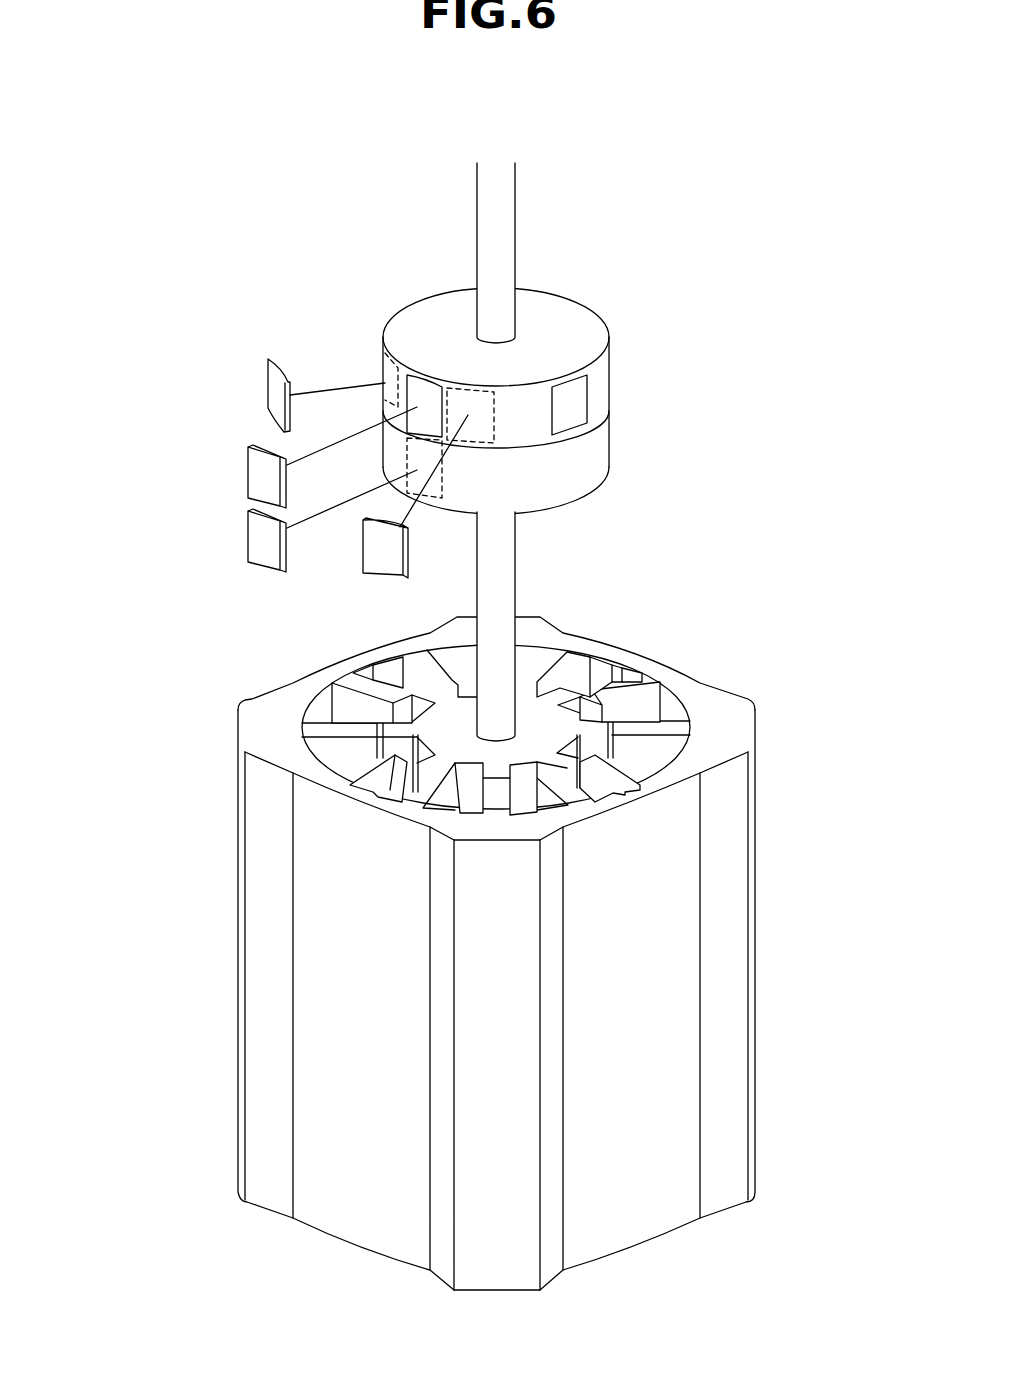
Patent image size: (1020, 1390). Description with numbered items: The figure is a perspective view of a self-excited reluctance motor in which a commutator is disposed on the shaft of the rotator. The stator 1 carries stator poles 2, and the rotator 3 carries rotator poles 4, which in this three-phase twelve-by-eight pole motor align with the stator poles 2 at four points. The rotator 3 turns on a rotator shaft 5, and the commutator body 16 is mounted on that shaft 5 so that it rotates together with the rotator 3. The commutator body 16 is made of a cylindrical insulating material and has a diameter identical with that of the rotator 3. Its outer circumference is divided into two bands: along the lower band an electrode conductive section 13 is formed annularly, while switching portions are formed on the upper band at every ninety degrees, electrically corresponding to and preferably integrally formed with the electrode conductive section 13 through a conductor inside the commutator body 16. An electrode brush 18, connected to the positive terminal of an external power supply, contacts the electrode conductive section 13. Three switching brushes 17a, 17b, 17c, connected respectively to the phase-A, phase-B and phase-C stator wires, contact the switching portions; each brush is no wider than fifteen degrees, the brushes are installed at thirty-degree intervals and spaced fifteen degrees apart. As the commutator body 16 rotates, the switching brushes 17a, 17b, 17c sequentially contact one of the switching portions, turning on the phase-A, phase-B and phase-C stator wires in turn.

The stator 1 is at (267, 732).
The stator pole 2 is at (373, 770).
The rotator 3 is at (590, 728).
The rotator pole 4 is at (523, 723).
The rotator shaft 5 is at (505, 203).
The electrode conductive section 13 is at (580, 463).
The commutator body 16 is at (423, 313).
The switching brush 17a is at (383, 563).
The switching brush 17b is at (257, 475).
The switching brush 17c is at (277, 392).
The electrode brush 18 is at (258, 542).